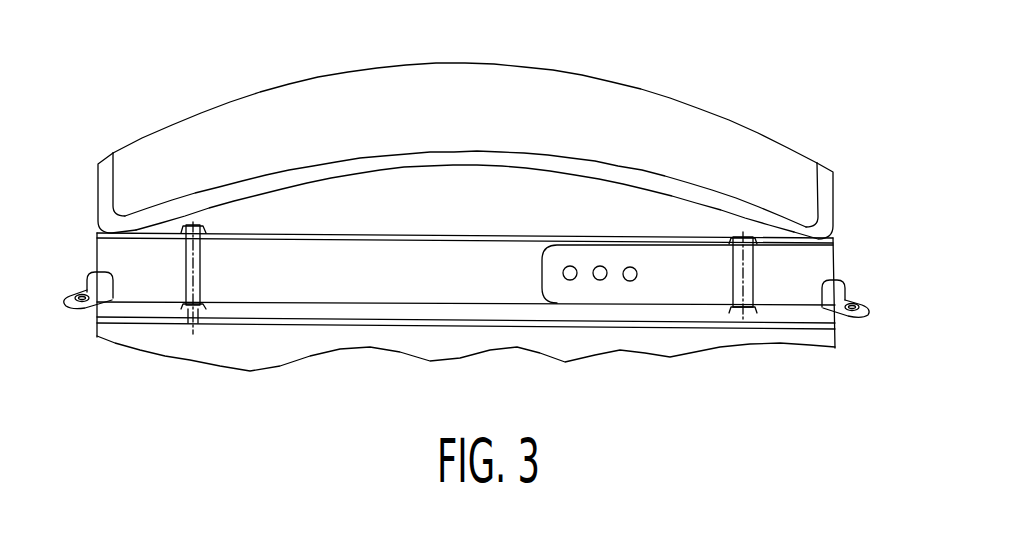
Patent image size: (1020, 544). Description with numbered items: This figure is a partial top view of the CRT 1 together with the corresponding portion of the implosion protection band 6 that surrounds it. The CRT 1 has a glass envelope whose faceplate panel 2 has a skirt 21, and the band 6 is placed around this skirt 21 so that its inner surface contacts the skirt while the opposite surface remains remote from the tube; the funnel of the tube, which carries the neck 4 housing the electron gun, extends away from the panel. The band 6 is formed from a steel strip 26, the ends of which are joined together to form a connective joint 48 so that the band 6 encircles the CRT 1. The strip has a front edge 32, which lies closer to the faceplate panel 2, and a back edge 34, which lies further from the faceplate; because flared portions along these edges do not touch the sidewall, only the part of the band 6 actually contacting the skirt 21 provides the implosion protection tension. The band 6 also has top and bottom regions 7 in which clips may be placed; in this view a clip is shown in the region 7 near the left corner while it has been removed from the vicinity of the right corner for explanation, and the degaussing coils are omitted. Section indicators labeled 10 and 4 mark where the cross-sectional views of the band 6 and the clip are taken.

The CRT 1 is at (633, 74).
The faceplate panel 2 is at (243, 113).
The skirt 21 is at (300, 205).
The steel strip 26 is at (309, 233).
The front edge 32 is at (413, 235).
The back edge 34 is at (350, 302).
The implosion protection band 6 is at (415, 277).
The top and bottom regions 7 is at (207, 259).
The section line 10 is at (195, 212).
The neck 4 is at (743, 230).
The connective joint 48 is at (570, 280).